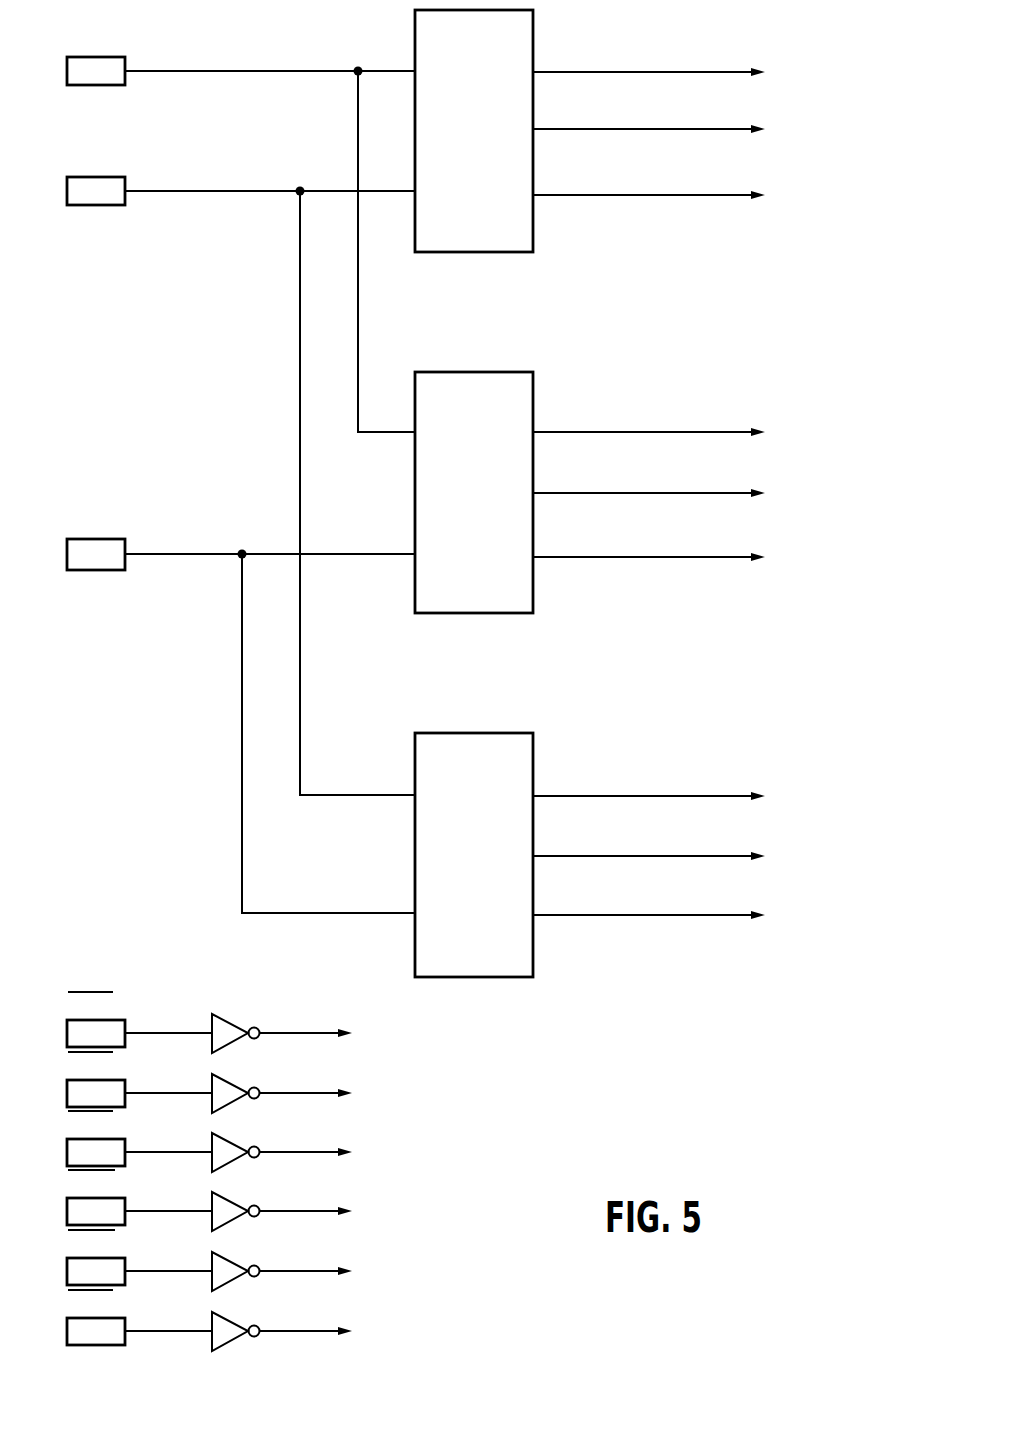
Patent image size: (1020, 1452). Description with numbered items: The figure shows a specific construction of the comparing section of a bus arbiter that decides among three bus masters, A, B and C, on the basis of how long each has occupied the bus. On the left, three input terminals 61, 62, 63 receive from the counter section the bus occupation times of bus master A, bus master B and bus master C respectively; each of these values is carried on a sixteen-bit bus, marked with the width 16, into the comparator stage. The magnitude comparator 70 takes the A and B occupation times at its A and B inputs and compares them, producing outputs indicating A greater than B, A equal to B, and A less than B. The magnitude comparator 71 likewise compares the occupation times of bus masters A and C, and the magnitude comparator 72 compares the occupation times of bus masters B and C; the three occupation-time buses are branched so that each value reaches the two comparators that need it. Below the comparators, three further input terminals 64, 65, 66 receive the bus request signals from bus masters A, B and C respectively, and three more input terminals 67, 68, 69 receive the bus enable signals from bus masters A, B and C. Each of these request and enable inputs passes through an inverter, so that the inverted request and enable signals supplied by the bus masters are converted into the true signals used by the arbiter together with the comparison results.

The 16-bit bus 16 is at (243, 62).
The input terminal 61 is at (118, 86).
The input terminal 62 is at (118, 206).
The input terminal 63 is at (115, 561).
The input terminal 64 is at (123, 1027).
The input terminal 65 is at (123, 1087).
The input terminal 66 is at (123, 1146).
The input terminal 67 is at (123, 1205).
The input terminal 68 is at (123, 1265).
The input terminal 69 is at (123, 1325).
The magnitude comparator 70 is at (534, 30).
The magnitude comparator 71 is at (534, 391).
The magnitude comparator 72 is at (533, 752).